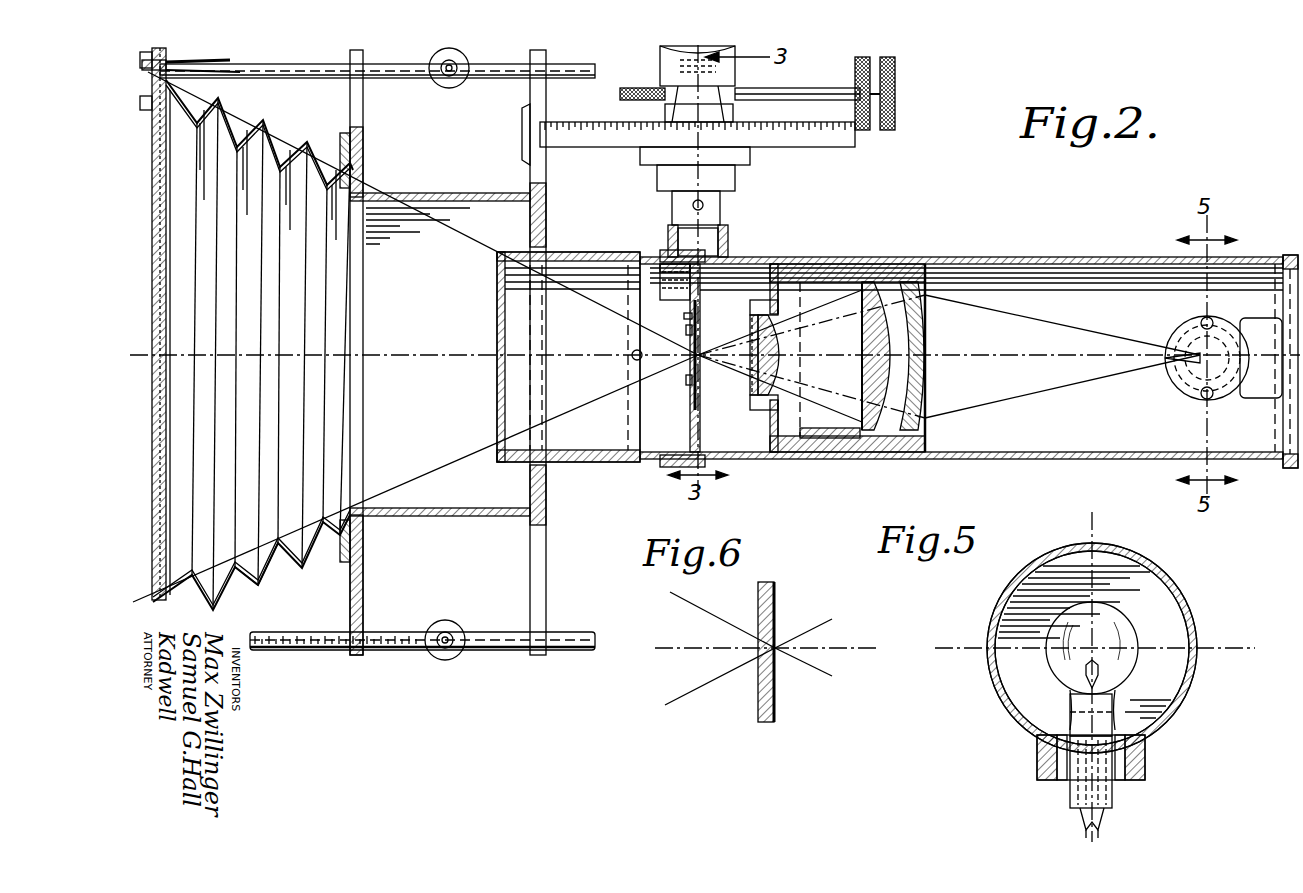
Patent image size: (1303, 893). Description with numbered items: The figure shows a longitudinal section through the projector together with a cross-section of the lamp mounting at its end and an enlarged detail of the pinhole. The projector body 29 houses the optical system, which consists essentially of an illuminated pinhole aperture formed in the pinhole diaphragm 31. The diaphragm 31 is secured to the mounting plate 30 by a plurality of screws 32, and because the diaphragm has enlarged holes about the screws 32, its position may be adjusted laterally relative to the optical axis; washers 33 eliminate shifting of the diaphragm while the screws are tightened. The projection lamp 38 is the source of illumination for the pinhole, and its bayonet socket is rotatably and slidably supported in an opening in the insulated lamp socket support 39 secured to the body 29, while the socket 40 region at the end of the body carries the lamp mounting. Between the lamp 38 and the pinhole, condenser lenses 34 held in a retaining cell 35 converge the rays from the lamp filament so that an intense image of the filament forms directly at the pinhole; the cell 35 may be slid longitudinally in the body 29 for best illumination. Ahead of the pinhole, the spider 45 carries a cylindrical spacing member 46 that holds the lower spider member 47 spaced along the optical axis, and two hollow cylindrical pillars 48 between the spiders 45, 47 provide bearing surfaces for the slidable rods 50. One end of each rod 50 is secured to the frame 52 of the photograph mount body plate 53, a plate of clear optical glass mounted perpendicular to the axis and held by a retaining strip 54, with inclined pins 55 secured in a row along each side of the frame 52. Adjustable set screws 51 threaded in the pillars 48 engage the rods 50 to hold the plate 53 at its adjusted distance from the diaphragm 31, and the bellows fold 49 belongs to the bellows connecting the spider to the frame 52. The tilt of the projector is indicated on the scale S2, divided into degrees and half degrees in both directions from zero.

In FIG. 2, the body 29 is at (1094, 258).
In FIG. 5, the body 29 is at (1165, 568).
In FIG. 2, the mounting plate 30 is at (690, 425).
In FIG. 2, the pinhole diaphragm 31 is at (688, 385).
In FIG. 6, the pinhole diaphragm 31 is at (776, 608).
In FIG. 2, the screws 32 is at (686, 330).
In FIG. 2, the washers 33 is at (677, 313).
In FIG. 2, the condenser lenses 34 is at (752, 395).
In FIG. 2, the retaining cell 35 is at (835, 254).
In FIG. 2, the projection lamp 38 is at (1207, 358).
In FIG. 5, the projection lamp 38 is at (1112, 622).
In FIG. 5, the insulated lamp socket support 39 is at (1107, 711).
In FIG. 2, the lamp socket 40 is at (1261, 358).
In FIG. 5, the lamp socket 40 is at (1145, 765).
In FIG. 2, the spider 45 is at (530, 92).
In FIG. 2, the cylindrical spacing member 46 is at (400, 185).
In FIG. 2, the lower spider member 47 is at (363, 138).
In FIG. 2, the hollow cylindrical pillars 48 is at (376, 80).
In FIG. 2, the bellows fold 49 is at (258, 585).
In FIG. 2, the slidable rods 50 is at (302, 68).
In FIG. 2, the adjustable set screws 51 is at (440, 85).
In FIG. 2, the frame 52 is at (215, 72).
In FIG. 2, the body plate 53 is at (253, 345).
In FIG. 2, the retaining strip 54 is at (178, 72).
In FIG. 2, the inclined pins 55 is at (150, 96).
In FIG. 2, the scale S2 is at (822, 135).